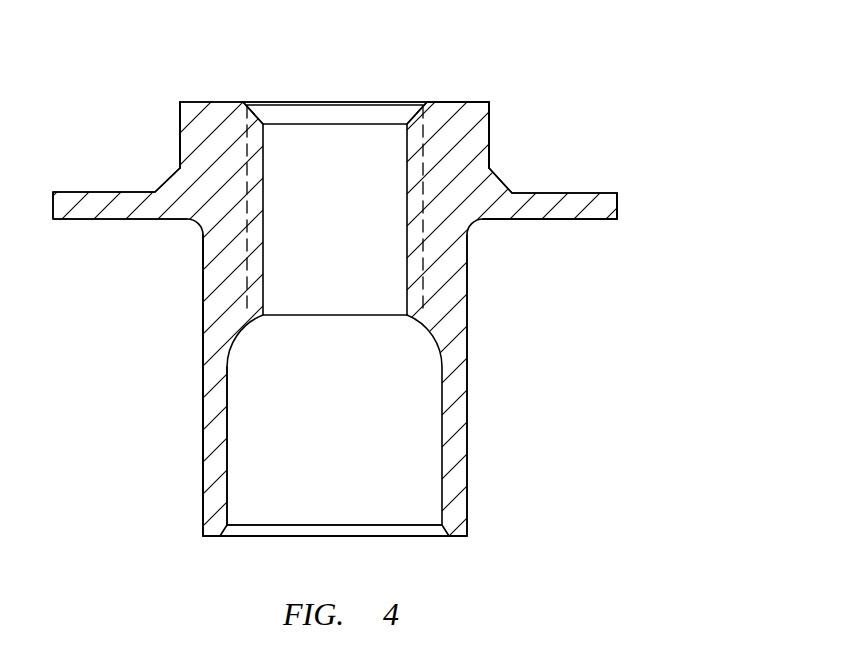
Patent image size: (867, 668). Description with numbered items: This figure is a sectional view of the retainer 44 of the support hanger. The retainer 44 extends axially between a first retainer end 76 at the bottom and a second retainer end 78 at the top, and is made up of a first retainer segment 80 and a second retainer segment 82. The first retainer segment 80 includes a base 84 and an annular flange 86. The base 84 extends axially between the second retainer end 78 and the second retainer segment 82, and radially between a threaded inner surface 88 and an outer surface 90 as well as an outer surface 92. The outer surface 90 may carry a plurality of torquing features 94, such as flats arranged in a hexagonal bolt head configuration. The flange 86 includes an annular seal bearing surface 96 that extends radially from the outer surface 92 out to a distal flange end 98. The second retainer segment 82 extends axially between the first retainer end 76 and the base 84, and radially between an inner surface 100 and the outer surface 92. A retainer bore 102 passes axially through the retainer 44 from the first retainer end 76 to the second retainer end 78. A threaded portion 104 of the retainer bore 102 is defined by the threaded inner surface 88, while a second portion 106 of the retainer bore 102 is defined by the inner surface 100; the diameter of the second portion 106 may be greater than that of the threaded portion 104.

The retainer 44 is at (622, 74).
The first retainer end 76 is at (260, 536).
The second retainer end 78 is at (332, 102).
The first retainer segment 80 is at (126, 146).
The second retainer segment 82 is at (160, 448).
The base 84 is at (473, 89).
The annular flange 86 is at (575, 193).
The threaded inner surface 88 is at (268, 155).
The outer surface 90 is at (180, 123).
The outer surface 92 is at (203, 292).
The torquing features 94 is at (490, 133).
The annular seal bearing surface 96 is at (552, 220).
The distal flange end 98 is at (617, 208).
The inner surface 100 is at (227, 438).
The retainer bore 102 is at (400, 508).
The threaded portion 104 is at (368, 139).
The second portion 106 is at (410, 411).